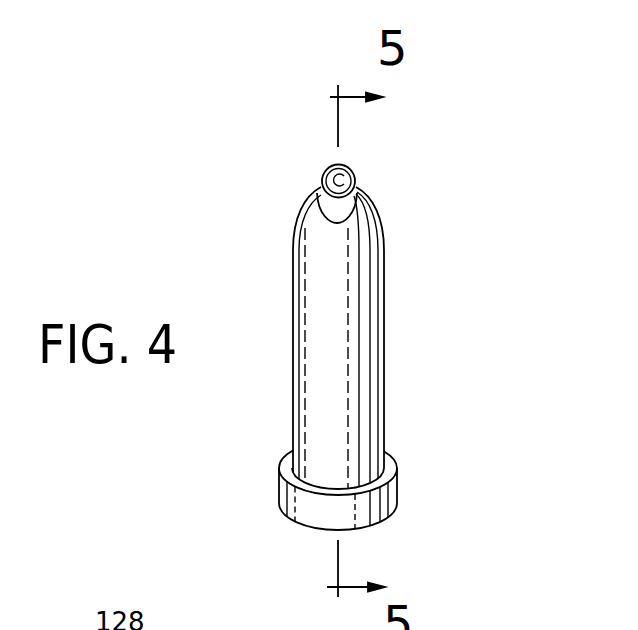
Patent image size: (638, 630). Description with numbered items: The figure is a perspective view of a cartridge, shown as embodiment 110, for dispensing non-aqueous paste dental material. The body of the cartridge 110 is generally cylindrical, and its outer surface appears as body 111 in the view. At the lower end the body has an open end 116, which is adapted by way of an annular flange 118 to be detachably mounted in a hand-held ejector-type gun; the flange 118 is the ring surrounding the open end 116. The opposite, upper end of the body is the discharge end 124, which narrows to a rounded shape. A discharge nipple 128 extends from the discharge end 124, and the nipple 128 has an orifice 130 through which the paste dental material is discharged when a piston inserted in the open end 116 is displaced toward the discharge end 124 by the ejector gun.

The cartridge 110 is at (472, 218).
The tubular body 111 is at (385, 332).
The open end 116 is at (300, 523).
The annular flange 118 is at (398, 492).
The discharge end 124 is at (318, 188).
The discharge nipple 128 is at (322, 204).
The orifice 130 is at (350, 169).